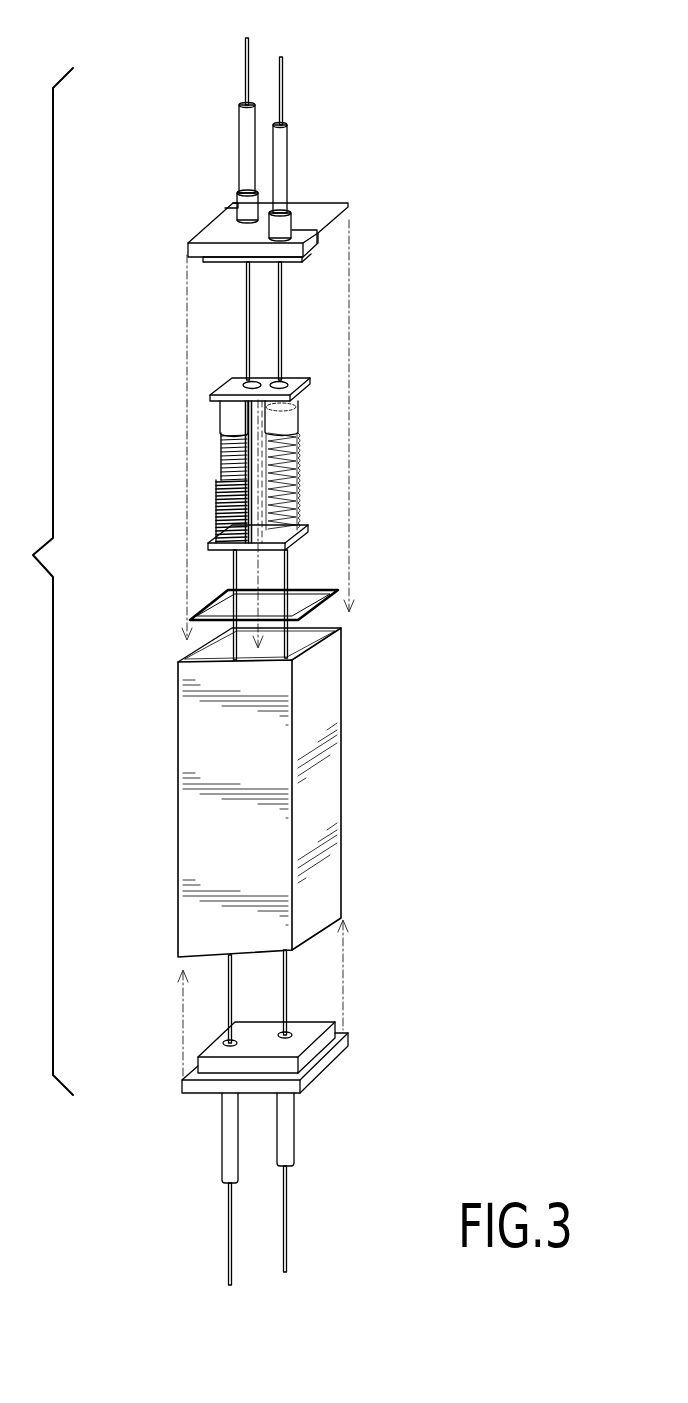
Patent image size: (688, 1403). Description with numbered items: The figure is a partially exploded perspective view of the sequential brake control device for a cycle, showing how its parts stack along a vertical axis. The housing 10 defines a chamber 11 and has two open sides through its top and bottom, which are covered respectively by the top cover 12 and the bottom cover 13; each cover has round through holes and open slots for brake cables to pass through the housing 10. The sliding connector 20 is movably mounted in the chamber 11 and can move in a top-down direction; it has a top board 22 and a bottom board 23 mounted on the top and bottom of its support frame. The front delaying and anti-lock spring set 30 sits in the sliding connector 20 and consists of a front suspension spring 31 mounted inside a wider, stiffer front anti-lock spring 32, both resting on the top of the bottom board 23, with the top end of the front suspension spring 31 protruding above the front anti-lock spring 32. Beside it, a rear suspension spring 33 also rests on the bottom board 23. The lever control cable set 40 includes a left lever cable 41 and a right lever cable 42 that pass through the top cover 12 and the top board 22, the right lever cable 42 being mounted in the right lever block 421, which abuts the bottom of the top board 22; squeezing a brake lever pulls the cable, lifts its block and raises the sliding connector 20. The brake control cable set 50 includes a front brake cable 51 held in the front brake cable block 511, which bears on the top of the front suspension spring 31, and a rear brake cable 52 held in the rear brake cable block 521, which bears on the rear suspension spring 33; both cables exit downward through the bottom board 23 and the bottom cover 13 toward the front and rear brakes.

The housing 10 is at (340, 757).
The chamber 11 is at (299, 633).
The top cover 12 is at (316, 210).
The bottom cover 13 is at (332, 1056).
The sliding connector 20 is at (300, 500).
The top board 22 is at (310, 378).
The bottom board 23 is at (220, 550).
The front delaying and anti-lock spring set 30 is at (216, 495).
The front suspension spring 31 is at (224, 460).
The front anti-lock spring 32 is at (220, 512).
The rear suspension spring 33 is at (300, 465).
The lever control cable set 40 is at (288, 65).
The left lever cable 41 is at (246, 75).
The right lever cable 42 is at (283, 110).
The brake control cable set 50 is at (201, 1142).
The front brake cable 51 is at (229, 1198).
The rear brake cable 52 is at (287, 1197).
The right lever block 421 is at (297, 408).
The front brake cable block 511 is at (226, 411).
The rear brake cable block 521 is at (299, 398).